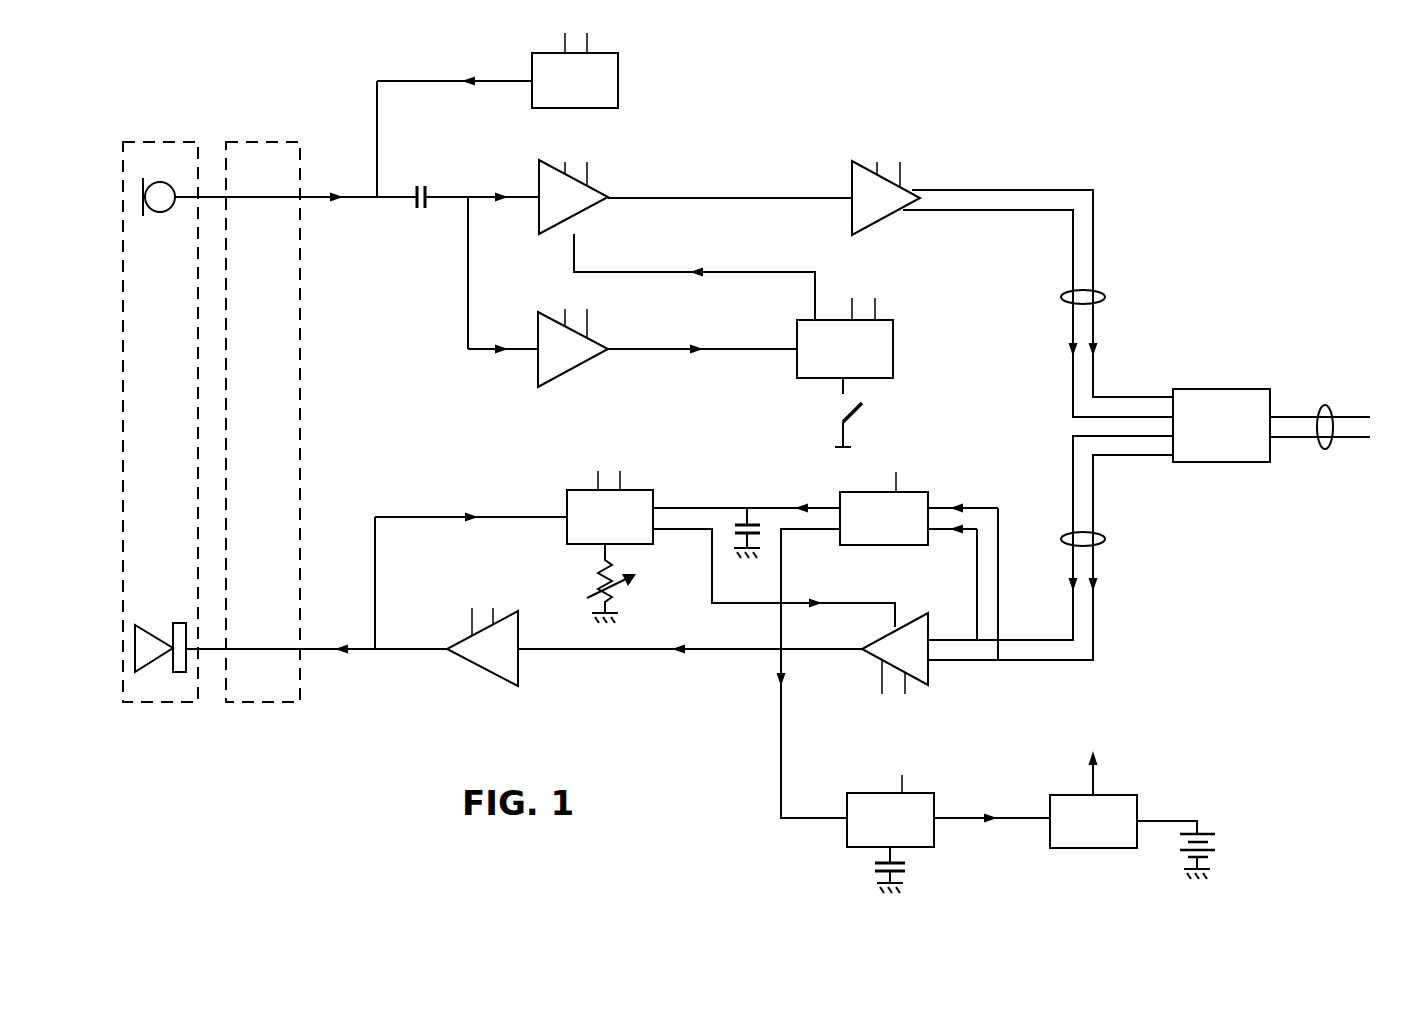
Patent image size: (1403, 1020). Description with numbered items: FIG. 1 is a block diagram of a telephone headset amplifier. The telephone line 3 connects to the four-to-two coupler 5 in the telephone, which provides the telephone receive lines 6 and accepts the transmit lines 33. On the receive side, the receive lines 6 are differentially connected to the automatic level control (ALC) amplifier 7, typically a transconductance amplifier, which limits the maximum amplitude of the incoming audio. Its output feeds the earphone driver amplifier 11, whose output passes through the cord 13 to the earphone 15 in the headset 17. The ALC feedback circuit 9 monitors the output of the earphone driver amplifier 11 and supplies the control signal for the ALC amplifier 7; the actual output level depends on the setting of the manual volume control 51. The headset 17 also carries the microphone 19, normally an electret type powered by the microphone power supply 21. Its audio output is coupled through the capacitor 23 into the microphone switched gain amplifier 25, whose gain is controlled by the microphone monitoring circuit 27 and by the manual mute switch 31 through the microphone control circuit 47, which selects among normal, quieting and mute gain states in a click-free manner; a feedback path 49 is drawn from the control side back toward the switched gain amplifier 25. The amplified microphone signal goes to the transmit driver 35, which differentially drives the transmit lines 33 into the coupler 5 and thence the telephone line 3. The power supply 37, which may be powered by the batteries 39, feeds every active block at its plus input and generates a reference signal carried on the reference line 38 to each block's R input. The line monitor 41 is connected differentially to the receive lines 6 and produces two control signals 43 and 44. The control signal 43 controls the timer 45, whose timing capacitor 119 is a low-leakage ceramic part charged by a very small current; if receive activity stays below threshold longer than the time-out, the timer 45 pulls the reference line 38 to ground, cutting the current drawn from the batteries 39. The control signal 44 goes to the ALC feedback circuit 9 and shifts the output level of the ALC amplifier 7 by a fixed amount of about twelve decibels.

The telephone line 3 is at (1325, 405).
The 4 to 2 coupler 5 is at (1221, 425).
The telephone receive lines 6 is at (1105, 539).
The automatic level control (ALC) amplifier 7 is at (895, 664).
The ALC feedback circuit 9 is at (610, 497).
The earphone driver amplifier 11 is at (482, 637).
The cord 13 is at (263, 140).
The earphone 15 is at (149, 663).
The headset 17 is at (159, 140).
The microphone 19 is at (171, 183).
The microphone power supply 21 is at (575, 61).
The capacitor 23 is at (421, 211).
The microphone switched gain amplifier 25 is at (573, 188).
The microphone monitoring circuit 27 is at (573, 338).
The manual mute switch 31 is at (867, 425).
The transmit lines 33 is at (1105, 297).
The transmit driver 35 is at (886, 189).
The power supply 37 is at (1093, 821).
The reference line 38 is at (1092, 747).
The batteries 39 is at (1192, 850).
The line monitor 41 is at (884, 499).
The control signal 43 is at (783, 739).
The control signal 44 is at (767, 503).
The timer 45 is at (890, 802).
The microphone control circuit 47 is at (845, 327).
The feedback line 49 is at (694, 277).
The manual volume control 51 is at (627, 583).
The timing capacitor 119 is at (908, 870).